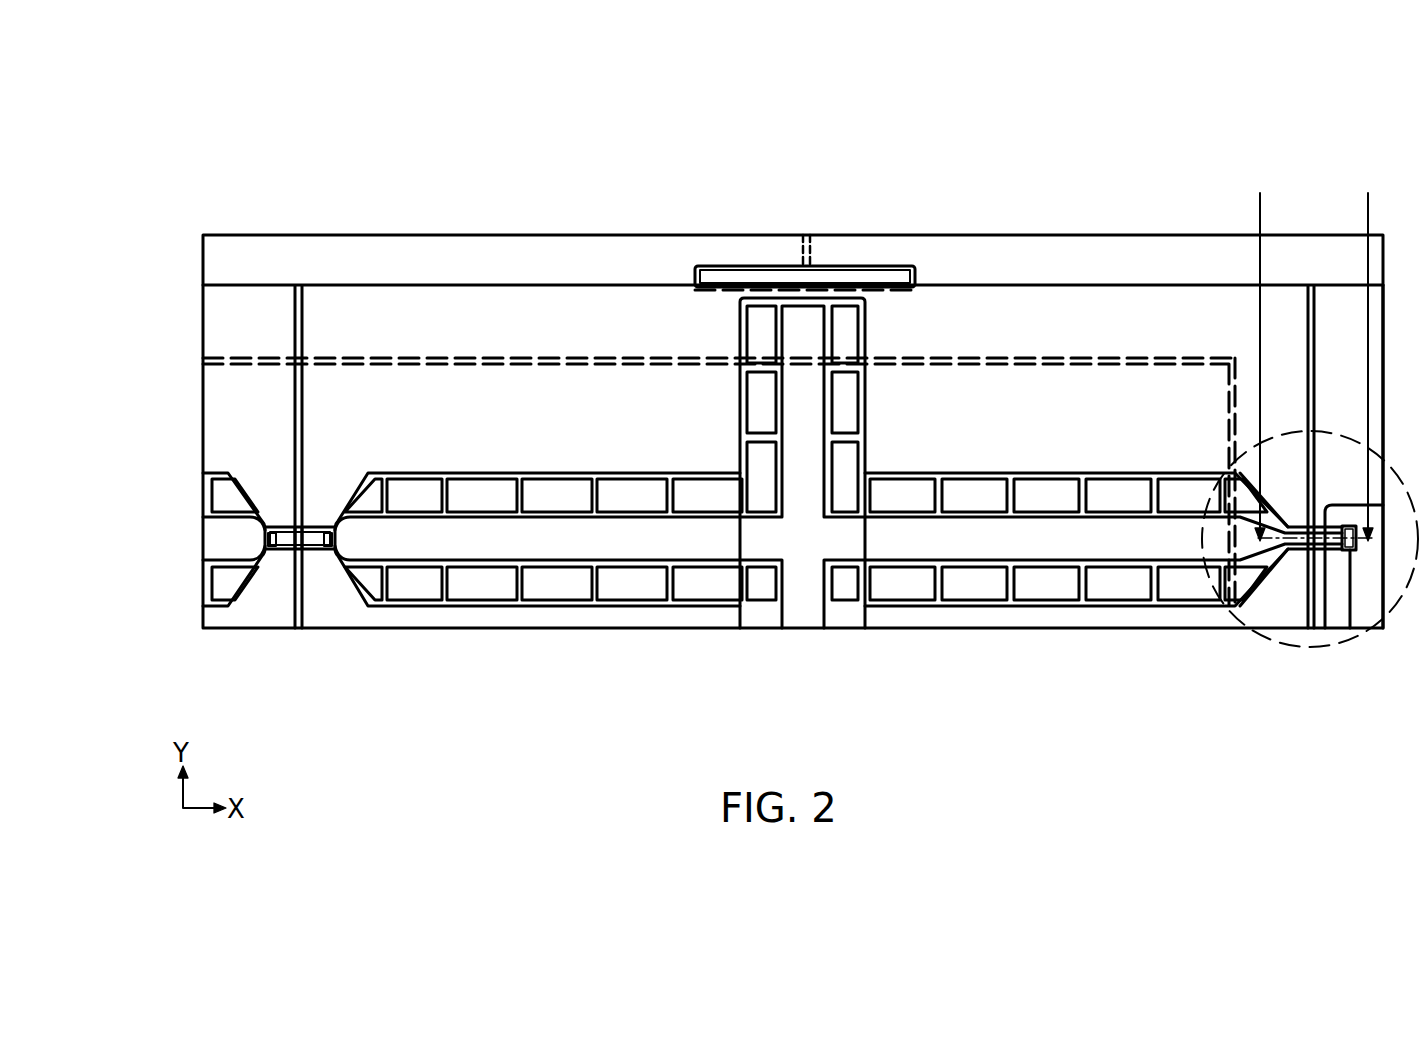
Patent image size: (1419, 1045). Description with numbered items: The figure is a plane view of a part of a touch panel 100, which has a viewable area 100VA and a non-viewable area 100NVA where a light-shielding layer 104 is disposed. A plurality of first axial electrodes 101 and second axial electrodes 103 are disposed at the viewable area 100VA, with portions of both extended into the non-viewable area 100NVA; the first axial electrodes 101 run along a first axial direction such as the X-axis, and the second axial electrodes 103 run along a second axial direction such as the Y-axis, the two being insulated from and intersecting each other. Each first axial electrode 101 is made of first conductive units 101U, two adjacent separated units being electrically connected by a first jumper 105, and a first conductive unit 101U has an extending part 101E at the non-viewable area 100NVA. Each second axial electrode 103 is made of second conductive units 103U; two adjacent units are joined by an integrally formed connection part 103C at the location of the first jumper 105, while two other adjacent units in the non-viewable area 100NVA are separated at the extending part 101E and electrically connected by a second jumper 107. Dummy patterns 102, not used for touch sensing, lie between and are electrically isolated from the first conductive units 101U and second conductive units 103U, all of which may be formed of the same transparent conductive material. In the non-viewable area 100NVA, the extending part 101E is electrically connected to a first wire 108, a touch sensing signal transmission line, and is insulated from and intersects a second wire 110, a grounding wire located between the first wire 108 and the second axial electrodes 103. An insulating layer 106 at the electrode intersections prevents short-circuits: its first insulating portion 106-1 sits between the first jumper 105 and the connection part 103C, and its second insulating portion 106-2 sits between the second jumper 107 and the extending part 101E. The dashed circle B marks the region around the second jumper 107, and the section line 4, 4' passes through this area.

The touch panel 100 is at (1182, 130).
The first axial electrode 101 is at (200, 522).
The first conductive unit 101U is at (222, 540).
The extending part 101E is at (1328, 625).
The dummy pattern 102 is at (630, 585).
The second axial electrode 103 is at (277, 274).
The second conductive unit 103U is at (232, 395).
The connection part 103C is at (296, 562).
The light-shielding layer 104 is at (443, 350).
The first jumper 105 is at (258, 542).
The insulating layer 106 is at (543, 352).
The first insulating portion 106-1 is at (305, 562).
The second insulating portion 106-2 is at (1258, 600).
The second jumper 107 is at (1298, 562).
The first wire 108 is at (1355, 620).
The second wire 110 is at (1327, 628).
The viewable area 100VA is at (990, 447).
The non-viewable area 100NVA is at (1163, 315).
The detail region B is at (1310, 564).
The section line 4 is at (1260, 352).
The section line 4' is at (1372, 352).